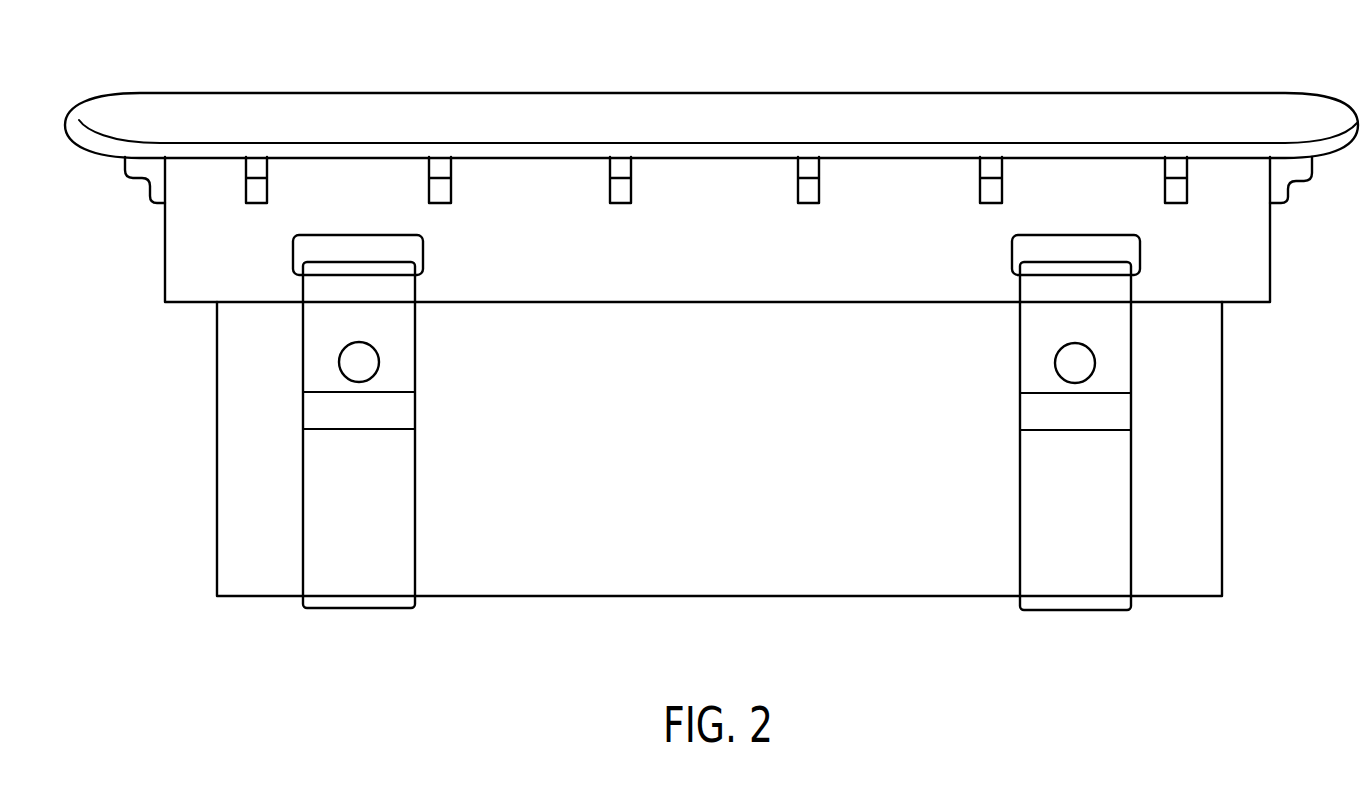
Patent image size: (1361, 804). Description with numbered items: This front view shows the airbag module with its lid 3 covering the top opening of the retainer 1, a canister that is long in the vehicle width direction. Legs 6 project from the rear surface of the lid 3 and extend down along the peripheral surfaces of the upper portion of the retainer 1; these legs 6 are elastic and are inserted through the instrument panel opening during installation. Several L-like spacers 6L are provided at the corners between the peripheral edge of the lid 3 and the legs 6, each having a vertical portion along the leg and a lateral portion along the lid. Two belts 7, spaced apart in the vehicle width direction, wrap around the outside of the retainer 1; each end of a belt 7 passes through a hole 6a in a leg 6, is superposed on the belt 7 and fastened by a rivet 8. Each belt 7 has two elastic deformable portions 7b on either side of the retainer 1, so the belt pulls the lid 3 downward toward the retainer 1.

The retainer 1 is at (668, 567).
The lid 3 is at (722, 110).
The leg 6 is at (1249, 273).
The L-like spacer 6L is at (127, 172).
The hole 6a is at (405, 250).
The belt 7 is at (398, 530).
The elastic deformable portion 7b is at (379, 431).
The rivet 8 is at (368, 361).